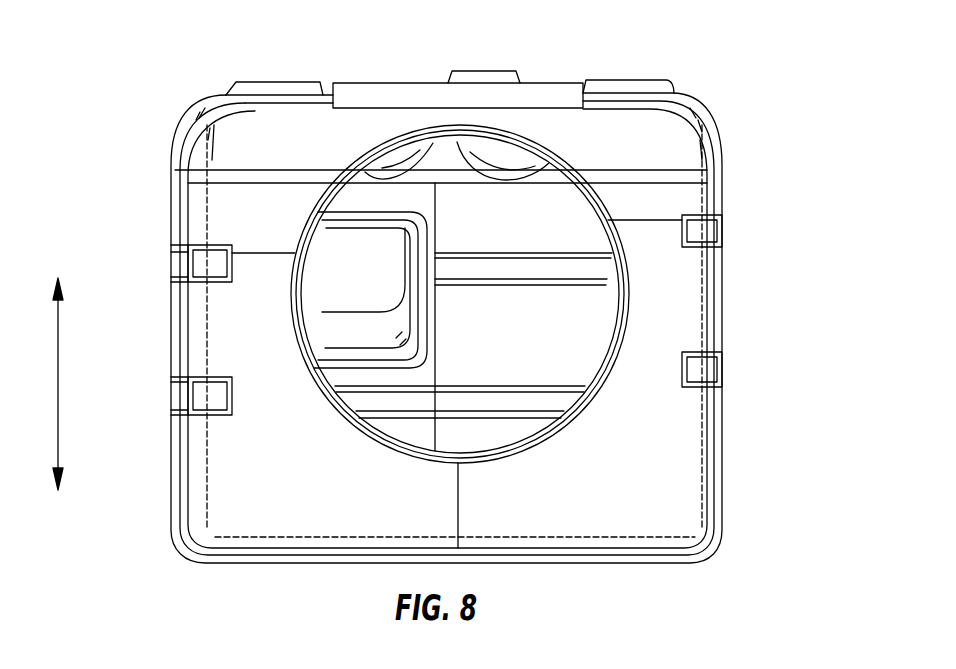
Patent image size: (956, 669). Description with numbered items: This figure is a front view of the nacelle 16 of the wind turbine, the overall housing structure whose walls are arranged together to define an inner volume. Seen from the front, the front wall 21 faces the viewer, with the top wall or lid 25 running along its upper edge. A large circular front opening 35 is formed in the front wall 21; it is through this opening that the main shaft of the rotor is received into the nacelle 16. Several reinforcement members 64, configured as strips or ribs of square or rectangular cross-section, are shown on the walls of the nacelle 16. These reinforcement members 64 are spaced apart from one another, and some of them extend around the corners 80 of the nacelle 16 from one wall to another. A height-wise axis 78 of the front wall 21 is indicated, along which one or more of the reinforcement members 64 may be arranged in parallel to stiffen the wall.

The nacelle 16 is at (797, 103).
The front wall 21 is at (233, 490).
The top wall or lid 25 is at (192, 123).
The front opening 35 is at (567, 337).
The reinforcement members 64 is at (182, 272).
The height-wise axis 78 is at (57, 392).
The corners 80 is at (185, 230).